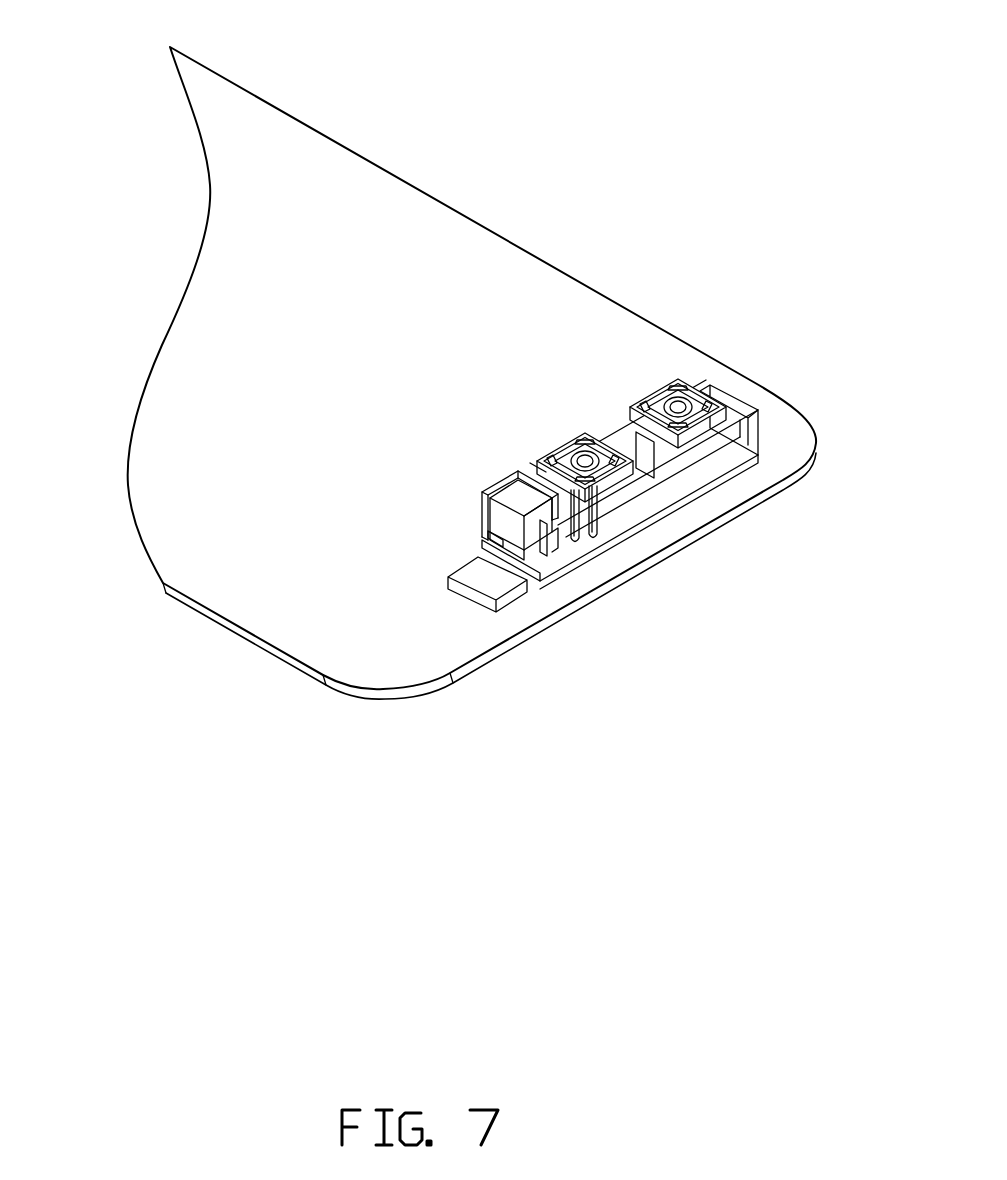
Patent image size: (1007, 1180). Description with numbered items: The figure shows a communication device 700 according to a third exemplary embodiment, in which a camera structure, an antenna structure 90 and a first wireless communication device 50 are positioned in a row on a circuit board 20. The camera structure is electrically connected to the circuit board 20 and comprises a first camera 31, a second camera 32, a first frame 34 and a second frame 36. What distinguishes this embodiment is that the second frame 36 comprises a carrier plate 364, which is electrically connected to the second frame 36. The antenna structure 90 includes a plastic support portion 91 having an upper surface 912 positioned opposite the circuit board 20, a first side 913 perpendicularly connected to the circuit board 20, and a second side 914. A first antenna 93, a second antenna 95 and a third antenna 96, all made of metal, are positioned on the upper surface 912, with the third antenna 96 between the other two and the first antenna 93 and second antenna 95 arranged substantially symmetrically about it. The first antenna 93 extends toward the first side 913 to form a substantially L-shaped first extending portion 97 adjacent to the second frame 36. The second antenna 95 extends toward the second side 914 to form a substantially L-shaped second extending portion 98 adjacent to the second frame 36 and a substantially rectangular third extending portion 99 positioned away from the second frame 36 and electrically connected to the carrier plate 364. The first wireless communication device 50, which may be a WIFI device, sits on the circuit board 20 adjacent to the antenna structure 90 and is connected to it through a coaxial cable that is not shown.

The communication device 700 is at (587, 181).
The circuit board 20 is at (558, 290).
The first camera 31 is at (687, 386).
The second camera 32 is at (583, 432).
The first frame 34 is at (742, 450).
The second frame 36 is at (645, 507).
The carrier plate 364 is at (619, 593).
The first wireless communication device 50 is at (470, 580).
The antenna structure 90 is at (384, 489).
The support portion 91 is at (502, 520).
The upper surface 912 is at (515, 493).
The first side 913 is at (560, 545).
The second side 914 is at (533, 557).
The first antenna 93 is at (493, 488).
The second antenna 95 is at (600, 492).
The third antenna 96 is at (533, 463).
The first extending portion 97 is at (572, 542).
The second extending portion 98 is at (502, 545).
The third extending portion 99 is at (547, 560).